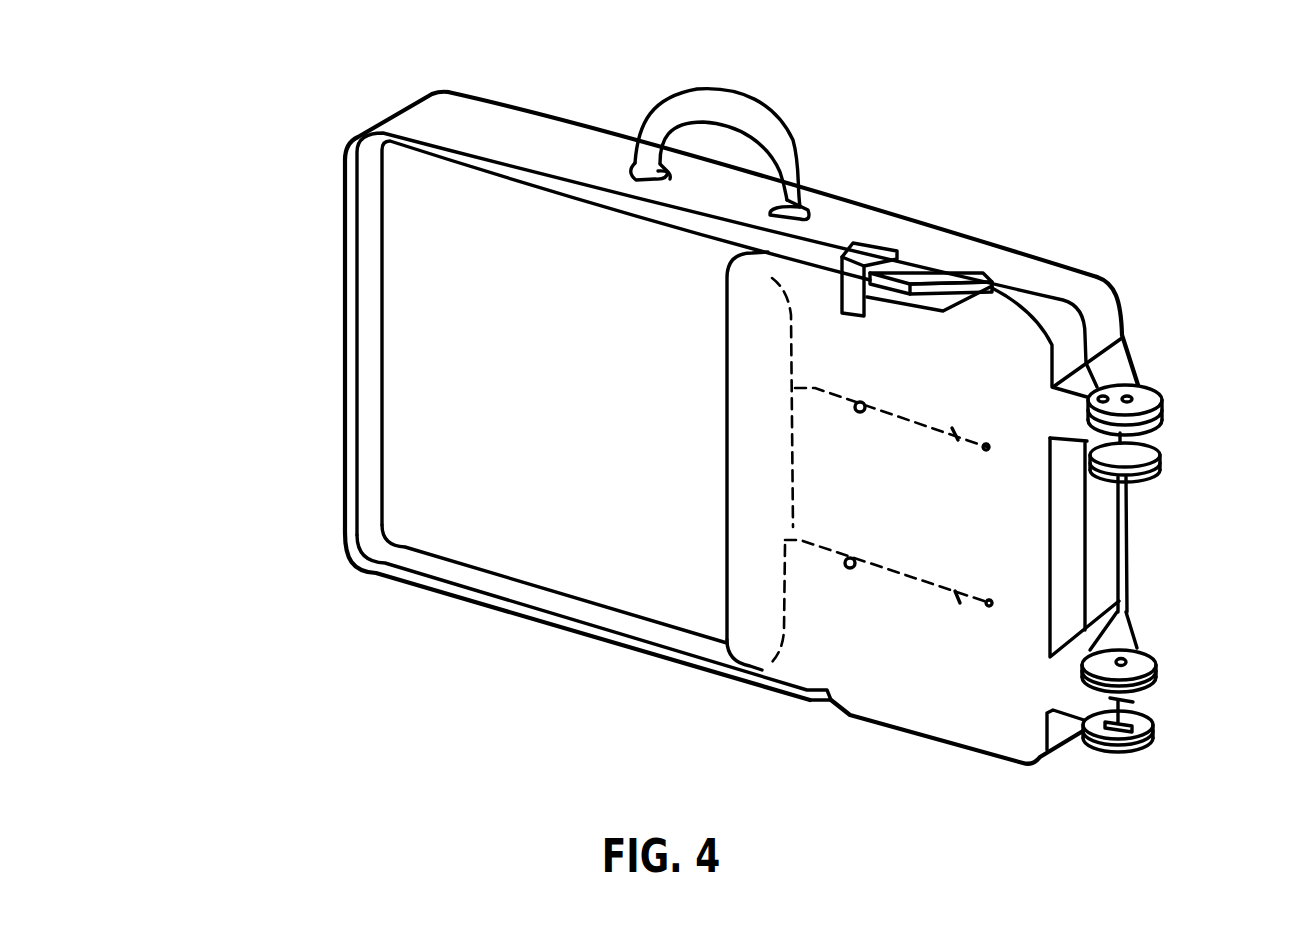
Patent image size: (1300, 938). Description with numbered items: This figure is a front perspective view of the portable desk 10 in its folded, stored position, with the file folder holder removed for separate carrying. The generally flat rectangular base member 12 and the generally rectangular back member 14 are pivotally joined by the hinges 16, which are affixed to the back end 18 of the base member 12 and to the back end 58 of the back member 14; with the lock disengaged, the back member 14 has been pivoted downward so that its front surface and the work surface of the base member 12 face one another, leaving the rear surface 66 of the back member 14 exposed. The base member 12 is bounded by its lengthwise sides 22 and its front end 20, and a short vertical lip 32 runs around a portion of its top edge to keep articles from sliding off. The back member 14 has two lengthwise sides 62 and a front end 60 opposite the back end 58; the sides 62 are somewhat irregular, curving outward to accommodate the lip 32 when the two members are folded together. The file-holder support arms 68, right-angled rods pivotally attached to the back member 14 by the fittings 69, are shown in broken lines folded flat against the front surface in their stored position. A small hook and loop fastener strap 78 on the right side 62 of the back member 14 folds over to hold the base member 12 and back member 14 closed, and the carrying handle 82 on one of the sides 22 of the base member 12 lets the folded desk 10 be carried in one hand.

The portable desk 10 is at (233, 289).
The base member 12 is at (463, 540).
The back member 14 is at (897, 673).
The hinge 16 is at (1163, 422).
The back end 18 is at (1103, 537).
The front end 20 is at (395, 120).
The lengthwise sides 22 is at (487, 126).
The lip 32 is at (557, 625).
The back end 58 is at (1060, 597).
The front end 60 is at (727, 437).
The sides 62 is at (1022, 302).
The rear surface 66 is at (807, 622).
The arms 68 is at (792, 572).
The fittings 69 is at (955, 440).
The hook and loop fastener strap 78 is at (895, 248).
The carrying handle 82 is at (772, 118).